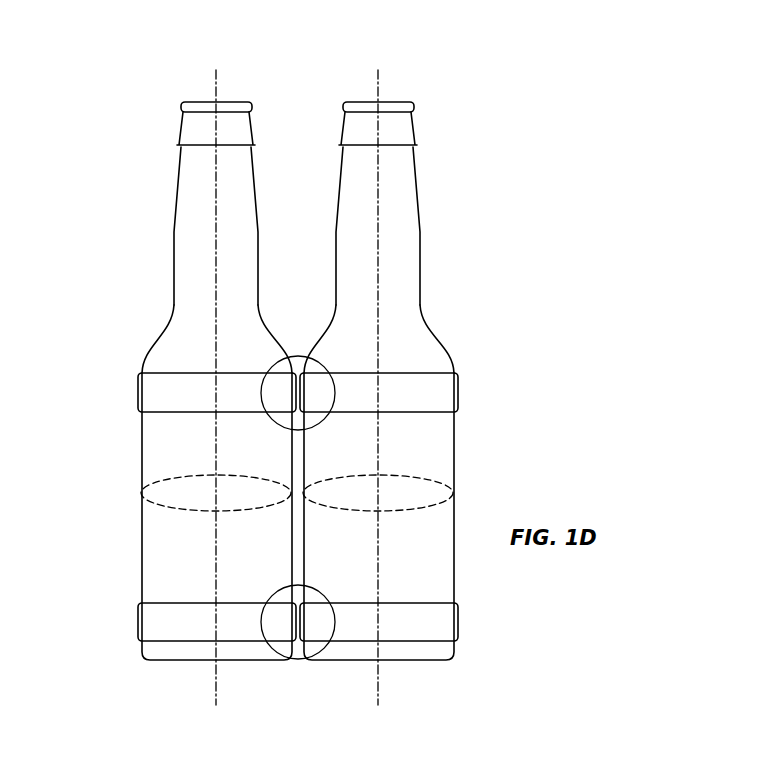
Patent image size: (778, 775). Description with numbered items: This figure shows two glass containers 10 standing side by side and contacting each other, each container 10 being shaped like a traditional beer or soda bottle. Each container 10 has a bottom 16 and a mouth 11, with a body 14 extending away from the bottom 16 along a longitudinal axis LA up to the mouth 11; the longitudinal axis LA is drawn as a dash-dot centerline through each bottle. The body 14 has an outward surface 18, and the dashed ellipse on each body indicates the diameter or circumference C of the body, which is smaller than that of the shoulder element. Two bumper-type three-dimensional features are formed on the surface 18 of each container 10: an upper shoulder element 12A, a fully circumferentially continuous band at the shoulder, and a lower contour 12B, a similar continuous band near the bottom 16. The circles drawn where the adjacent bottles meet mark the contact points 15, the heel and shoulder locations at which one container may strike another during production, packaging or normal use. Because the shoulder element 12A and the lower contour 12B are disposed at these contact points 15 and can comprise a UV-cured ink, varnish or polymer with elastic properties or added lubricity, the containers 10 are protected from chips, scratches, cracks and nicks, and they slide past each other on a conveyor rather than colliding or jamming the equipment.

The container 10 is at (305, 381).
The mouth 11 is at (190, 102).
The shoulder element 12A is at (153, 397).
The lower contour 12B is at (155, 633).
The body 14 is at (179, 187).
The contact points 15 is at (297, 358).
The bottom 16 is at (178, 663).
The surface 18 is at (172, 280).
The circumference of the body C is at (158, 500).
The longitudinal axis LA is at (218, 80).